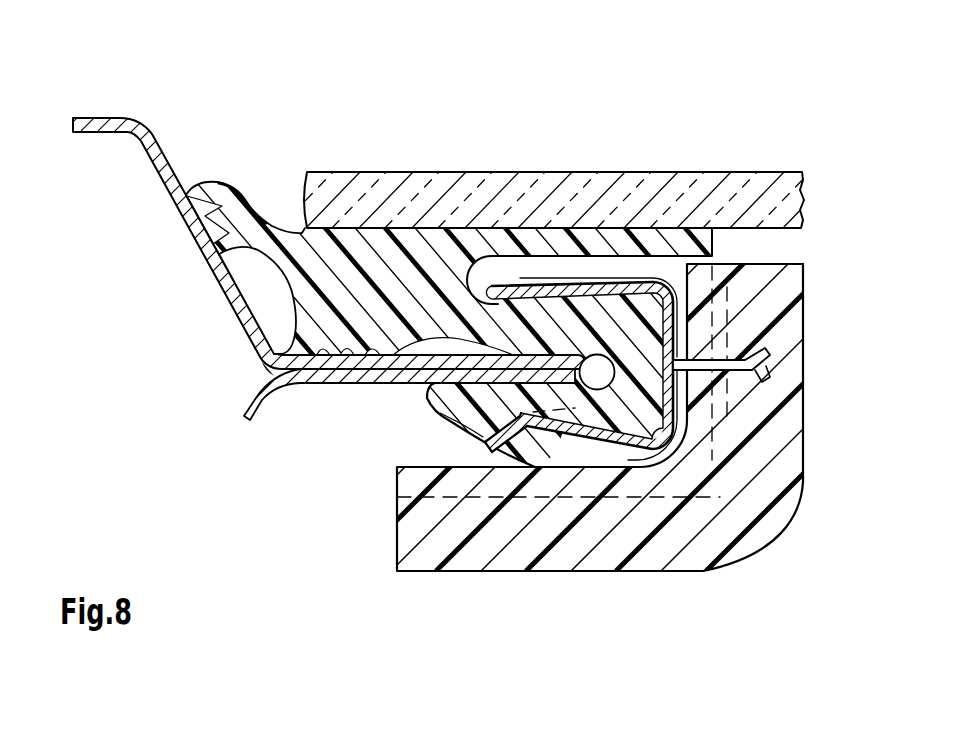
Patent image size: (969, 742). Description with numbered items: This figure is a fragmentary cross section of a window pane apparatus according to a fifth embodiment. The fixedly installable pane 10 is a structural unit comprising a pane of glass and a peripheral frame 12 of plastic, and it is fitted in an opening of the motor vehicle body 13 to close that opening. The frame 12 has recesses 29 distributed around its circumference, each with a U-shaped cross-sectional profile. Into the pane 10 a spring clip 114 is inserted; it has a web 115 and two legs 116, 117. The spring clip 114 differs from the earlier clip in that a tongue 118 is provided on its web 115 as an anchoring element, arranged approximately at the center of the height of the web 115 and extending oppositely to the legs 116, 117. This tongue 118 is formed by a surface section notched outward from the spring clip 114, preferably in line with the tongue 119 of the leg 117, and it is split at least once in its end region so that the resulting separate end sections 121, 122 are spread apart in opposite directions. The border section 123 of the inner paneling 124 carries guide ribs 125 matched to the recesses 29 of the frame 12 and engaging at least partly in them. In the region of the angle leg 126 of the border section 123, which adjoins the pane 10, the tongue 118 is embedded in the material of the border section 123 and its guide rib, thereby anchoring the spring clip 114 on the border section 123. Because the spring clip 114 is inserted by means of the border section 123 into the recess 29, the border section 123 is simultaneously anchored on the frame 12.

The fixedly installable pane 10 is at (755, 164).
The peripheral frame 12 is at (286, 298).
The motor vehicle body 13 is at (122, 116).
The recess 29 is at (510, 274).
The spring clip 114 is at (652, 282).
The web 115 is at (690, 309).
The leg 116 is at (566, 300).
The leg 117 is at (598, 442).
The tongue 118 is at (742, 390).
The tongue 119 is at (553, 435).
The end section 121 is at (762, 350).
The end section 122 is at (760, 384).
The border section 123 is at (713, 573).
The inner paneling 124 is at (394, 543).
The guide rib 125 is at (400, 480).
The angle leg 126 is at (778, 486).